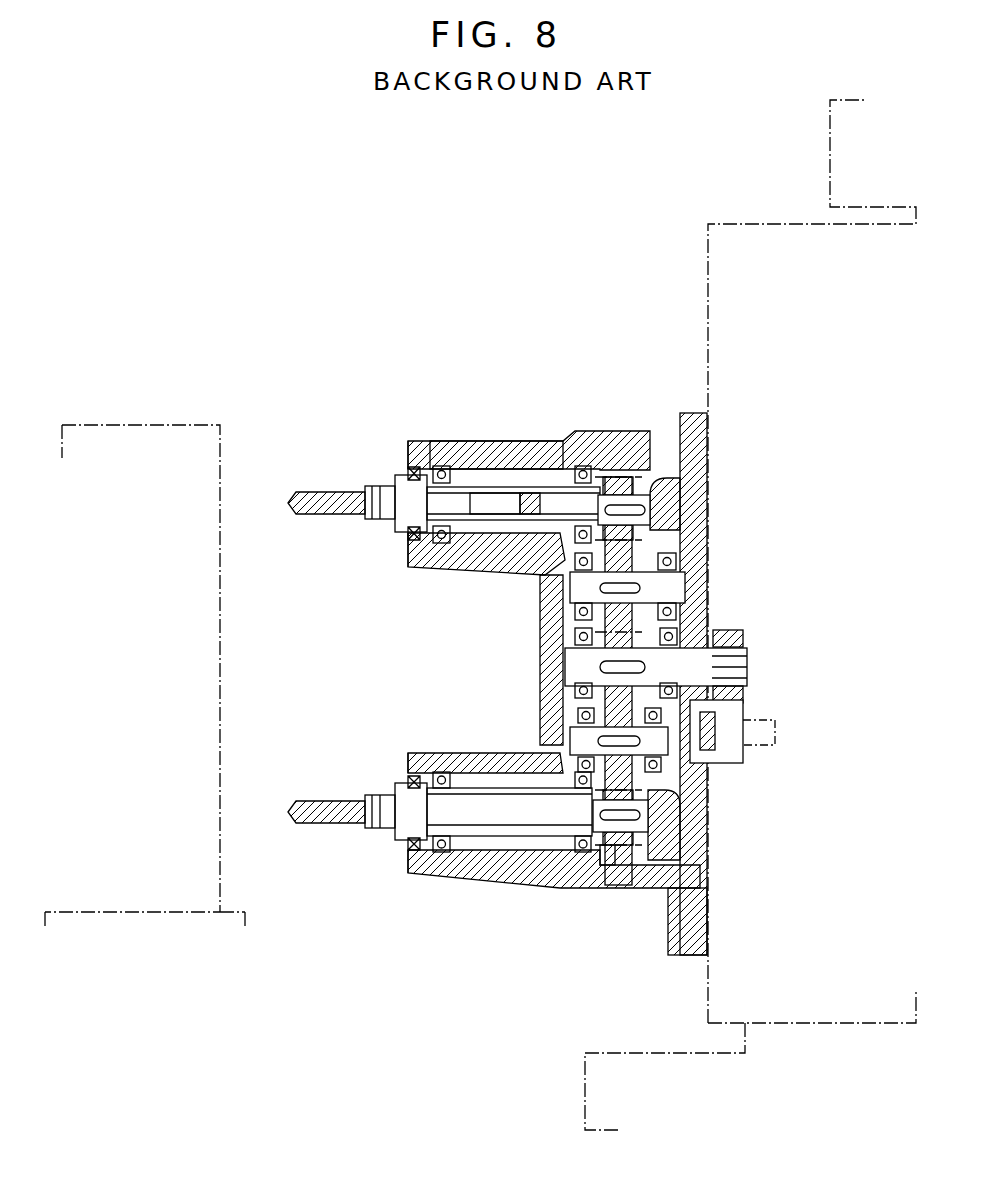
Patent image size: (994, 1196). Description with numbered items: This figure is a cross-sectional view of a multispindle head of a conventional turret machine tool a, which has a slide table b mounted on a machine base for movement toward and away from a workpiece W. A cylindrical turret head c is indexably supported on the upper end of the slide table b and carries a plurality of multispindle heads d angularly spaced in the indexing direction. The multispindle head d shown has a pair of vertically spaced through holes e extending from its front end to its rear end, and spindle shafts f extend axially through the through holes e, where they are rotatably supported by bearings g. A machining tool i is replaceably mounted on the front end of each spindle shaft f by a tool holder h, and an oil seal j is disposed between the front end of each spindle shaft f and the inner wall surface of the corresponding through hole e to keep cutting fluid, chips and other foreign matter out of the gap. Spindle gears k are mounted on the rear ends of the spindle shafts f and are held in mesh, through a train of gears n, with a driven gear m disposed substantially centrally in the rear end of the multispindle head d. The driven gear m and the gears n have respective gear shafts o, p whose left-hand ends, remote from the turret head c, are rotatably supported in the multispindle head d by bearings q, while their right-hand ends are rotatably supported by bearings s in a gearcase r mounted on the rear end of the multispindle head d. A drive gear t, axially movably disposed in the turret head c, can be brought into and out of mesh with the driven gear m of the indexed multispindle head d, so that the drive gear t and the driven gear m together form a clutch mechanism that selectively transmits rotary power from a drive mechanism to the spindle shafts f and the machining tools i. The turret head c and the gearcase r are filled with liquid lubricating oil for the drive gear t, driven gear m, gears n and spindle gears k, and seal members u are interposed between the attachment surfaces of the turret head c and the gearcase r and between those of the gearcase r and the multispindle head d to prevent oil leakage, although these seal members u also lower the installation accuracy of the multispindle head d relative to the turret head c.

The conventional turret machine tool a is at (624, 327).
The slide table b is at (585, 1082).
The turret head c is at (722, 327).
The workpiece W is at (150, 425).
The multispindle head d is at (504, 465).
The through hole e is at (485, 468).
The spindle shaft f is at (536, 470).
The bearing g is at (583, 466).
The tool holder h is at (385, 483).
The machining tool i is at (301, 498).
The oil seal j is at (412, 470).
The spindle gear k is at (630, 475).
The driven gear m is at (730, 630).
The gear n is at (632, 550).
The gear shaft o is at (677, 668).
The gear shaft p is at (575, 582).
The bearing q is at (577, 630).
The gearcase r is at (695, 452).
The bearing s is at (676, 572).
The drive gear t is at (742, 762).
The seal member u is at (609, 890).